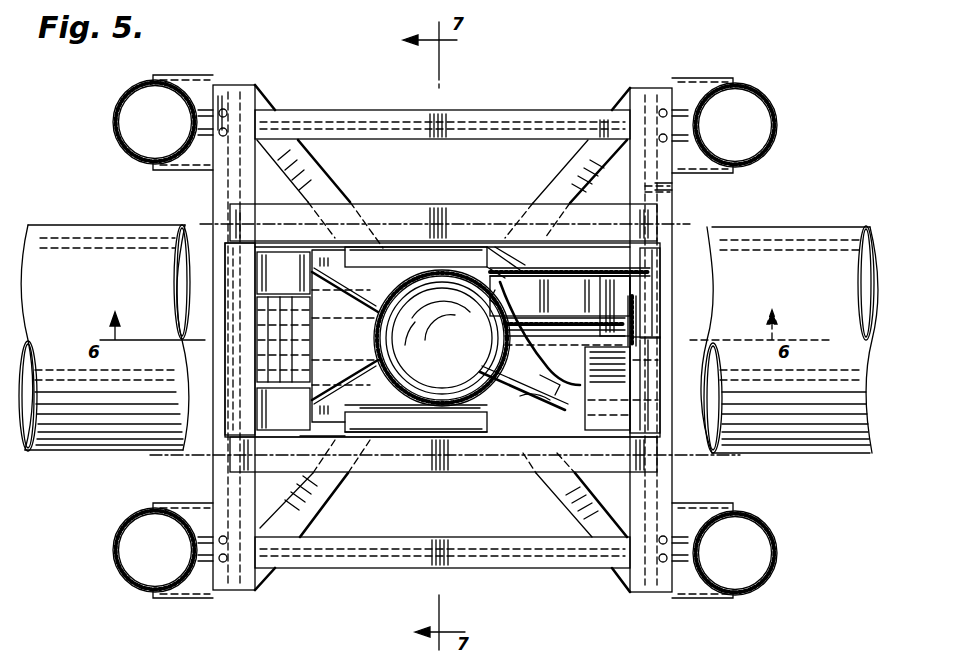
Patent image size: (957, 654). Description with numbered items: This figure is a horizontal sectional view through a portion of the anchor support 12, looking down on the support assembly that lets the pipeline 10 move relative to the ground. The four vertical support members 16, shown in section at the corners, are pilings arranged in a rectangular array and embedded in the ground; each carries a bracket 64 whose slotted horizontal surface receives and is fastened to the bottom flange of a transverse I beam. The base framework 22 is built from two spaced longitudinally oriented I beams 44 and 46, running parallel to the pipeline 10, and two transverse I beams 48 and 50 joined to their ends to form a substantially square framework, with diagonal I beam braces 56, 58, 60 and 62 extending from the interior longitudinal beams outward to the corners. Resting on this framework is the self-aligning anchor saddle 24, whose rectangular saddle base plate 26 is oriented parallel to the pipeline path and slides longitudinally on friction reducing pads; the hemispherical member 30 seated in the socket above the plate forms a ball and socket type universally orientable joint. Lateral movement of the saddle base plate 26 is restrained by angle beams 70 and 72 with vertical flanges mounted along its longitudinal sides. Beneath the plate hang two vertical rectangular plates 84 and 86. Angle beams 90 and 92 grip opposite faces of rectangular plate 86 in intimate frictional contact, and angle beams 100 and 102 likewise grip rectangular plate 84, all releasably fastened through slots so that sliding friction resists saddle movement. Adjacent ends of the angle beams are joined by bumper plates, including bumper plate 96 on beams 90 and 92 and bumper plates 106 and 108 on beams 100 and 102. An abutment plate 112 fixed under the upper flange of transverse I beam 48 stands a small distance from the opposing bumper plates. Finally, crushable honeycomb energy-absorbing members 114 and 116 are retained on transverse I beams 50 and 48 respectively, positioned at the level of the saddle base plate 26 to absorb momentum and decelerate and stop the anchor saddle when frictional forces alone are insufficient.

The pipeline 10 is at (815, 230).
The anchor support 12 is at (505, 90).
The vertical support members 16 is at (112, 114).
The base framework 22 is at (407, 203).
The anchor saddle 24 is at (412, 272).
The saddle base plate 26 is at (344, 351).
The hemispherical member 30 is at (462, 363).
The longitudinally oriented I beam 44 is at (507, 568).
The longitudinally oriented I beam 46 is at (553, 110).
The transverse I beam 48 is at (670, 194).
The transverse I beam 50 is at (215, 206).
The I beam brace 56 is at (326, 192).
The I beam brace 58 is at (328, 505).
The I beam brace 60 is at (558, 506).
The I beam brace 62 is at (572, 168).
The brackets 64 is at (200, 88).
The angle beam 70 is at (430, 433).
The angle beam 72 is at (472, 264).
The rectangular plate 84 is at (520, 336).
The rectangular plate 86 is at (487, 438).
The angle beam 90 is at (588, 356).
The angle beam 92 is at (535, 388).
The bumper plate 96 is at (265, 348).
The angle beam 100 is at (550, 308).
The angle beam 102 is at (600, 330).
The bumper plate 106 is at (650, 284).
The bumper plate 108 is at (272, 300).
The abutment plate 112 is at (645, 320).
The energy-absorbing member 114 is at (278, 380).
The energy-absorbing member 116 is at (653, 396).